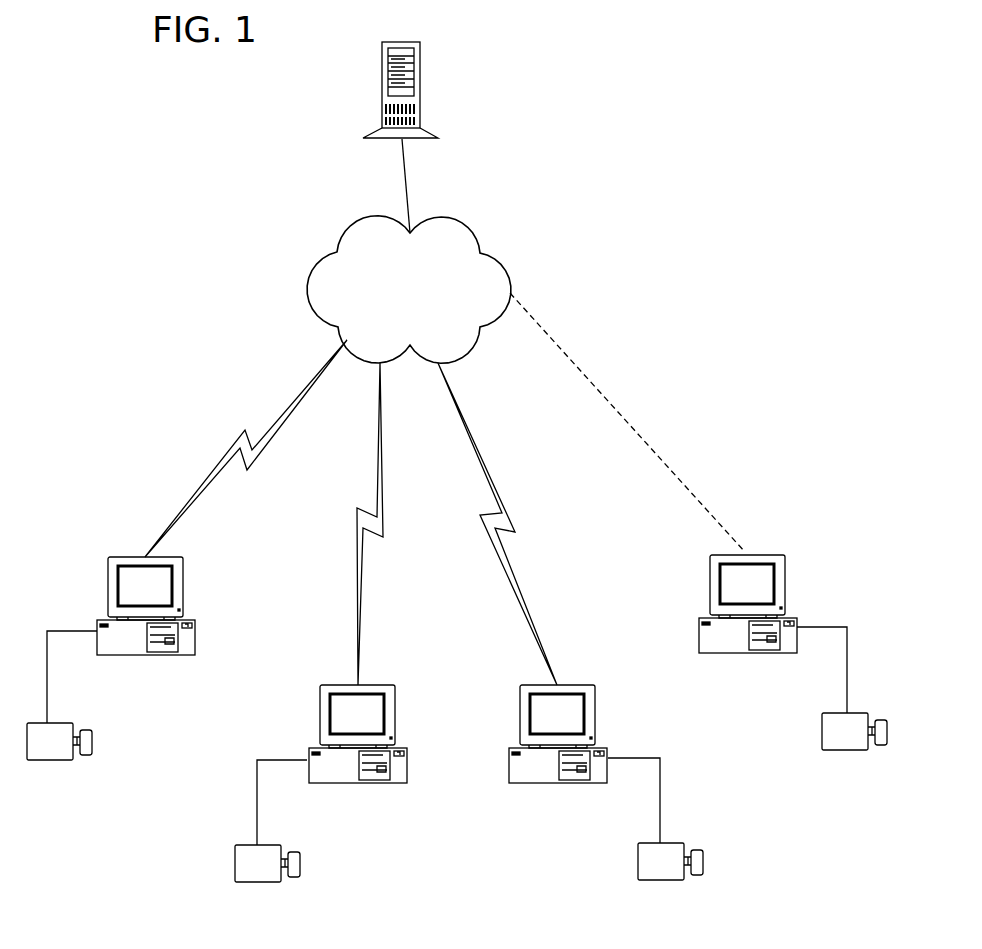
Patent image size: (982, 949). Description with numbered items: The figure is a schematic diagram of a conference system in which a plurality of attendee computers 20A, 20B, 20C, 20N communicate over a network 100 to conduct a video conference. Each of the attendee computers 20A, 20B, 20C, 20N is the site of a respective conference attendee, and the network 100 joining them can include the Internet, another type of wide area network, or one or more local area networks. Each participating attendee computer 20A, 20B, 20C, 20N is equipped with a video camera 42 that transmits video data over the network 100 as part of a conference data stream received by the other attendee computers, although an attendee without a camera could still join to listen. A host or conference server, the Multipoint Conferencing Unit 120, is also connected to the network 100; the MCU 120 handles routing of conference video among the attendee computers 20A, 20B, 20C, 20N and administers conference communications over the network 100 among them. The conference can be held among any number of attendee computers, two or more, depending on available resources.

The Multipoint Conferencing Unit (MCU) 120 is at (446, 90).
The network 100 is at (457, 221).
The attendee computer 20A is at (121, 538).
The attendee computer 20B is at (332, 660).
The attendee computer 20C is at (582, 668).
The attendee computer 20N is at (774, 542).
The video camera 42 is at (50, 762).